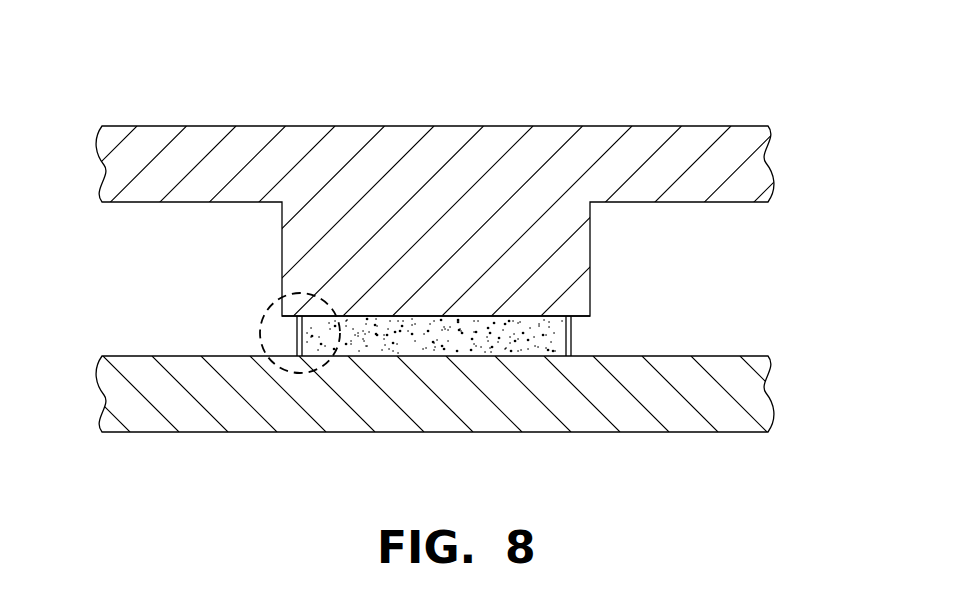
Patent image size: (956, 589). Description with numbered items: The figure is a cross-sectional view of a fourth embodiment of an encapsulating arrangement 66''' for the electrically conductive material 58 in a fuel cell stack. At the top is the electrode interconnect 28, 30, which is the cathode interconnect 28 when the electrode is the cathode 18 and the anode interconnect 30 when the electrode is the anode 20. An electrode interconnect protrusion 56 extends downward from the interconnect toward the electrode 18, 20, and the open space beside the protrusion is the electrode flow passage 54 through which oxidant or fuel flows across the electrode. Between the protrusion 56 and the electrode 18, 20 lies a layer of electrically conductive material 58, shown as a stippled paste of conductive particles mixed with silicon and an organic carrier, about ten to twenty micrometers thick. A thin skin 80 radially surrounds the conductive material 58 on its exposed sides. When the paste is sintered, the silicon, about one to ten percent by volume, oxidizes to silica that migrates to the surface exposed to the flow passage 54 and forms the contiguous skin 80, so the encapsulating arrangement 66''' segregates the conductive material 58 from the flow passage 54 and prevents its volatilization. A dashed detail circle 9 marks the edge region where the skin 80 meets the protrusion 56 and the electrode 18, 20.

The cathode interconnect 28 is at (478, 160).
The anode interconnect 30 is at (327, 126).
The cathode 18 is at (435, 454).
The anode 20 is at (727, 415).
The electrode flow passage 54 is at (220, 245).
The electrode interconnect protrusion 56 is at (282, 293).
The skin 80 is at (300, 335).
The electrically conductive material 58 is at (522, 343).
The encapsulating arrangement 66''' is at (710, 338).
The detail circle for FIG. 9 is at (266, 365).